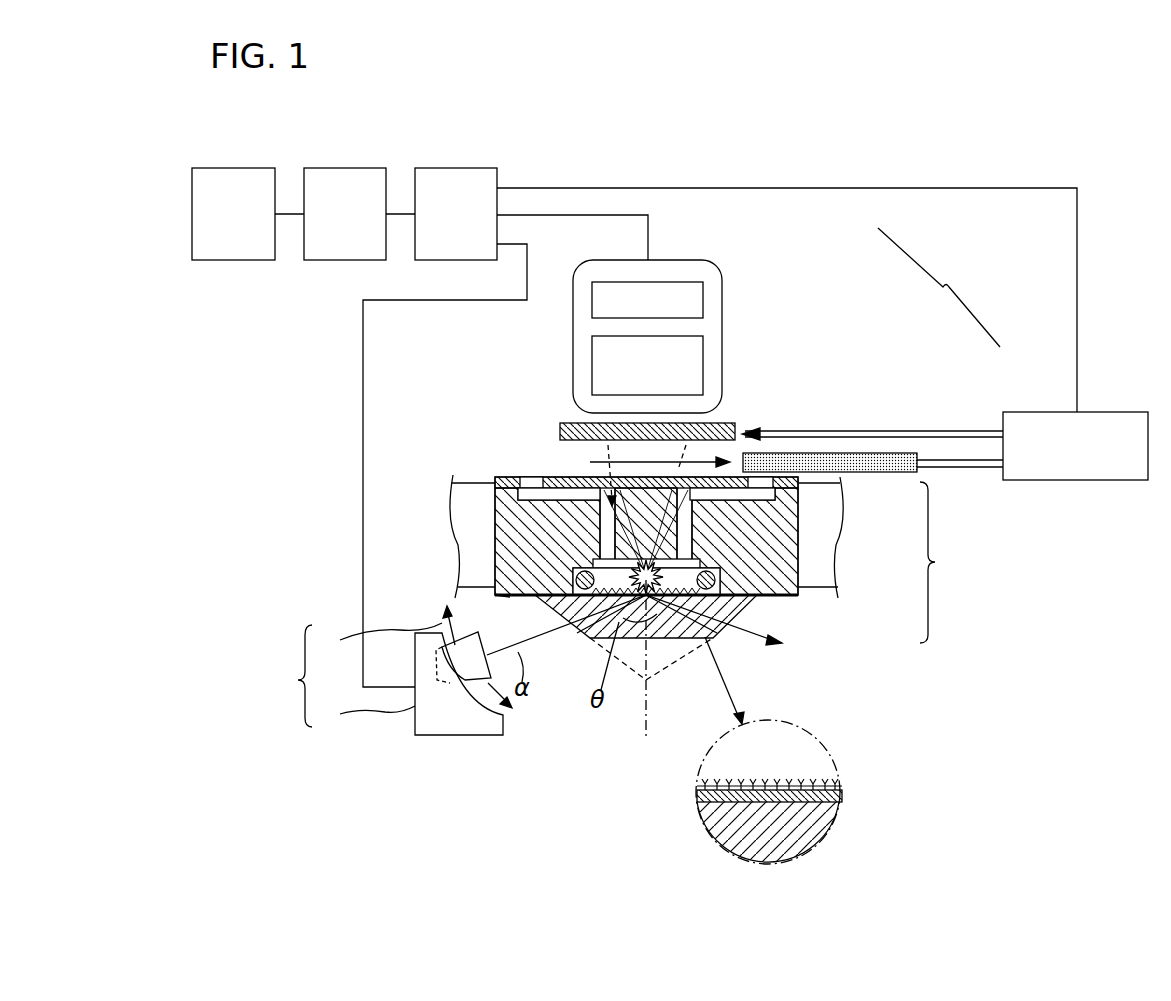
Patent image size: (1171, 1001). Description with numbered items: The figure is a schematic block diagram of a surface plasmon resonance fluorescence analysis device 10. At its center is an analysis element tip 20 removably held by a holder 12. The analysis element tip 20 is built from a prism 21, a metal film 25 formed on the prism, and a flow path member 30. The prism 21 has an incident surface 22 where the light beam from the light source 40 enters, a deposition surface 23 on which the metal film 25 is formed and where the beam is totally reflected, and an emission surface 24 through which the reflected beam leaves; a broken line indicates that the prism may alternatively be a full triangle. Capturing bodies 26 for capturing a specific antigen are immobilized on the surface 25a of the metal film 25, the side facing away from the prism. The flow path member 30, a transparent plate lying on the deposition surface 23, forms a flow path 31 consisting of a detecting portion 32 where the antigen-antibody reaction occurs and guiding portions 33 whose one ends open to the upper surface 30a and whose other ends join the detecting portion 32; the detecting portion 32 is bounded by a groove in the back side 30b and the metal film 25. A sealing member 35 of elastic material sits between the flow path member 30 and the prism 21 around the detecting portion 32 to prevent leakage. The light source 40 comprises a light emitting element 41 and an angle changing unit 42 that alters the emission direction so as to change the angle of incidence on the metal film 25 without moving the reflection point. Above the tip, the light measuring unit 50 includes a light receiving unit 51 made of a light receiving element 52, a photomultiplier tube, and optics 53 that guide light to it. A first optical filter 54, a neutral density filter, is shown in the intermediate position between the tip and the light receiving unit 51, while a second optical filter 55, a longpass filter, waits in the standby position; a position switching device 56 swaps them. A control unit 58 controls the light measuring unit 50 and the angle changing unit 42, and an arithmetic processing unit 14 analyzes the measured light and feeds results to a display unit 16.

The fluorescence analysis device 10 is at (1094, 180).
The holder 12 is at (463, 497).
The arithmetic processing unit 14 is at (346, 168).
The display unit 16 is at (232, 168).
The analysis element tip 20 is at (944, 562).
The prism 21 is at (722, 640).
The incident surface 22 is at (566, 603).
The deposition surface 23 is at (580, 623).
The emission surface 24 is at (750, 600).
The metal film 25 is at (842, 796).
The surface of the metal film 25a is at (820, 778).
The capturing bodies 26 is at (800, 778).
The flow path member 30 is at (629, 493).
The surface of the flow path member 30a is at (728, 423).
The back side of the flow path member 30b is at (510, 597).
The flow path 31 is at (592, 470).
The detecting portion 32 is at (505, 478).
The guiding portions 33 is at (560, 497).
The sealing member 35 is at (715, 582).
The light source 40 is at (289, 676).
The light emitting element 41 is at (440, 626).
The angle changing unit 42 is at (415, 712).
The light measuring unit 50 is at (939, 287).
The light receiving unit 51 is at (722, 272).
The light receiving element 52 is at (703, 296).
The optics 53 is at (703, 345).
The first optical filter 54 is at (742, 428).
The second optical filter 55 is at (900, 453).
The position switching device 56 is at (1035, 412).
The control unit 58 is at (452, 168).